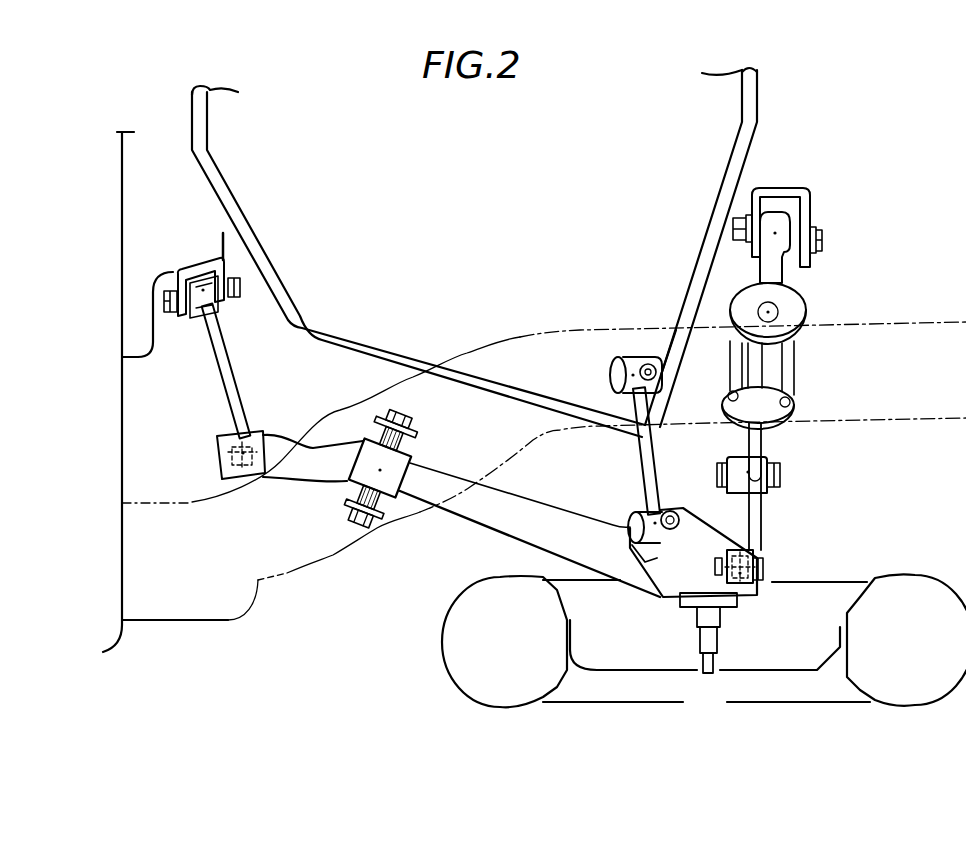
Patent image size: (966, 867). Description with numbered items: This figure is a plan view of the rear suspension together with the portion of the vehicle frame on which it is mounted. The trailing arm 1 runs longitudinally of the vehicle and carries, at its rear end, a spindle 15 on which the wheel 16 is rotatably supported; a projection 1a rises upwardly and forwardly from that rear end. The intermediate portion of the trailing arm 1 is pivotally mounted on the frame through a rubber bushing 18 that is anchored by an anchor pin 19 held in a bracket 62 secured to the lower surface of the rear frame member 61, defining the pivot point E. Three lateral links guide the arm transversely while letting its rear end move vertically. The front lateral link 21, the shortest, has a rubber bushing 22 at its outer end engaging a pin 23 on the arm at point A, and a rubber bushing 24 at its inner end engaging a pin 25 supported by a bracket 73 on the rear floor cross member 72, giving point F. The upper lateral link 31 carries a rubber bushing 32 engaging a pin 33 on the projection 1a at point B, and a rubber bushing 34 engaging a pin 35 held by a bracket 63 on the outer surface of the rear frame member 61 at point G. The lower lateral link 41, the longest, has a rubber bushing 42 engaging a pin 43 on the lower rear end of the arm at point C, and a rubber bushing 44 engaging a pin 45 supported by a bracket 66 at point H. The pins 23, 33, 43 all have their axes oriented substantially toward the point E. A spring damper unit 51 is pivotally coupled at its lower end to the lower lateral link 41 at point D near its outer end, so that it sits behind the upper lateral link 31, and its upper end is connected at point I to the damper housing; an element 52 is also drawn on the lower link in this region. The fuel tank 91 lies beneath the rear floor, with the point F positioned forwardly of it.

The trailing arm 1 is at (503, 500).
The projection 1a is at (650, 552).
The spindle 15 is at (705, 680).
The wheel 16 is at (665, 712).
The rubber bushing 18 is at (363, 440).
The anchor pin 19 is at (400, 417).
The front lateral link 21 is at (217, 371).
The rubber bushing 22 is at (250, 473).
The pin 23 is at (232, 452).
The rubber bushing 24 is at (188, 285).
The pin 25 is at (165, 298).
The upper lateral link 31 is at (653, 447).
The rubber bushing 32 is at (650, 540).
The pin 33 is at (672, 512).
The rubber bushing 34 is at (620, 357).
The pin 35 is at (660, 375).
The lower lateral link 41 is at (755, 523).
The rubber bushing 42 is at (722, 590).
The pin 43 is at (763, 570).
The rubber bushing 44 is at (770, 215).
The pin 45 is at (823, 241).
The spring damper unit 51 is at (812, 365).
The bushing 52 is at (782, 482).
The rear frame member 61 is at (283, 578).
The bracket 62 is at (370, 523).
The bracket 63 is at (647, 353).
The bracket 66 is at (802, 190).
The rear floor cross member 72 is at (226, 240).
The bracket 73 is at (230, 272).
The fuel tank 91 is at (732, 112).
The coupling point A is at (243, 453).
The coupling point B is at (655, 523).
The coupling point C is at (740, 573).
The coupling point D is at (748, 472).
The pivot point E is at (380, 470).
The coupling point F is at (203, 290).
The coupling point G is at (633, 375).
The coupling point H is at (777, 233).
The coupling point I is at (770, 312).